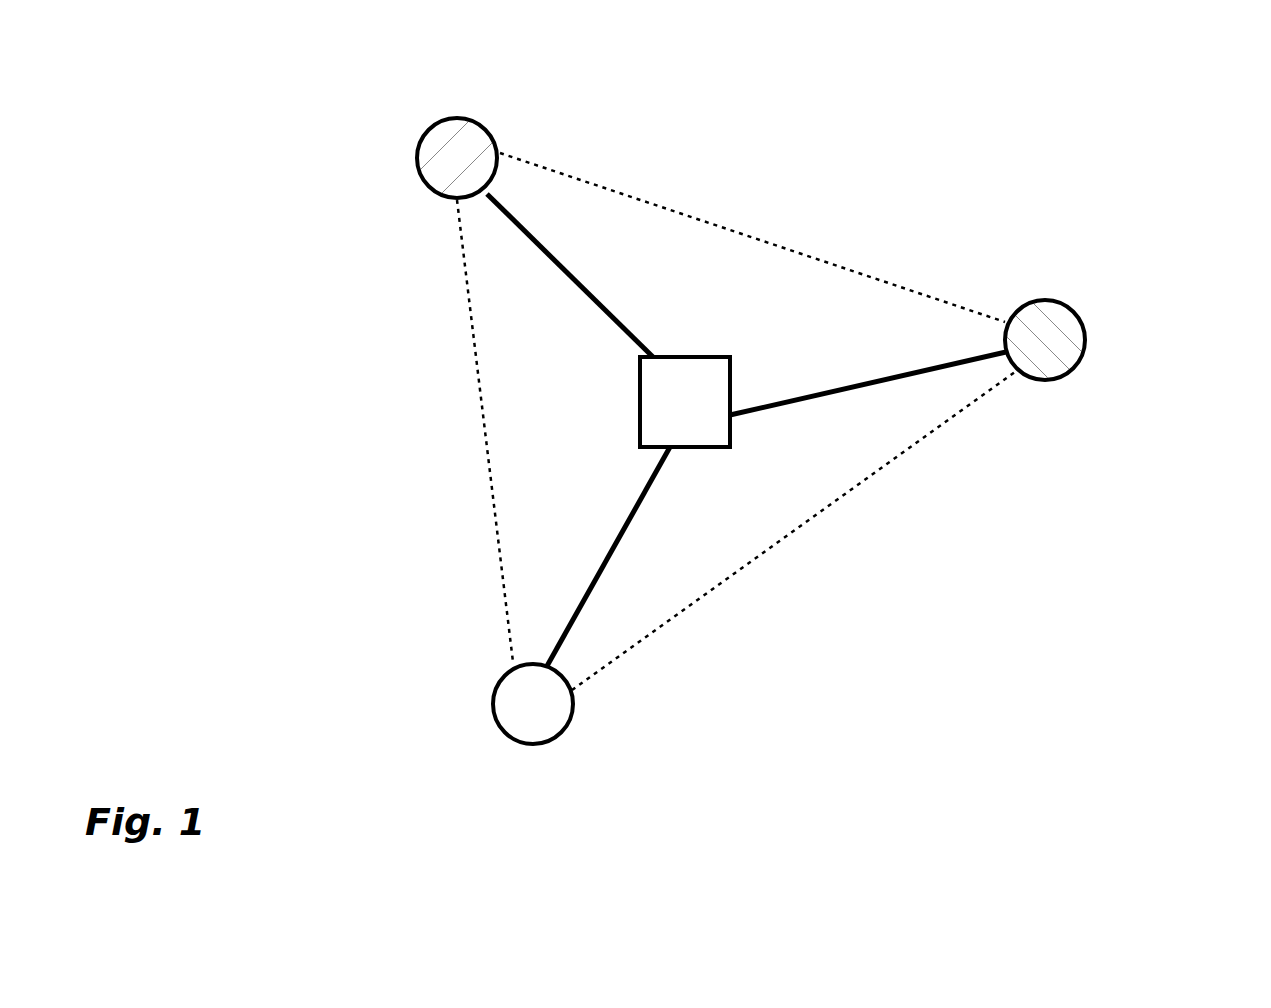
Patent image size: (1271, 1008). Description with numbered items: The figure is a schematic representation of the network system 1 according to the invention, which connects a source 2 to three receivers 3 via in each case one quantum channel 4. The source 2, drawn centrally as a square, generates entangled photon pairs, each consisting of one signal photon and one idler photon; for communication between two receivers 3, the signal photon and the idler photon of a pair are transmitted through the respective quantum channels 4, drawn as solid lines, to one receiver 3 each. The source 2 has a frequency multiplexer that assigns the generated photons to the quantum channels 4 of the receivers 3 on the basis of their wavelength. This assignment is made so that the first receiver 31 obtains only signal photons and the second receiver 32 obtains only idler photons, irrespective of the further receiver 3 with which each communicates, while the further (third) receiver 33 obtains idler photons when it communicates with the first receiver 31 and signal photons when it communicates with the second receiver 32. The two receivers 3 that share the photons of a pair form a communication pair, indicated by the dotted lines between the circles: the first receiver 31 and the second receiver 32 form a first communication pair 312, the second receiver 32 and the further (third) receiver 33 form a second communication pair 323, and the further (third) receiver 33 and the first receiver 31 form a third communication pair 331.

The network system 1 is at (413, 397).
The source 2 is at (675, 418).
The receivers 3 is at (402, 137).
The quantum channel 4 is at (617, 315).
The first receiver 31 is at (437, 174).
The second receiver 32 is at (1025, 356).
The further (third) receiver 33 is at (513, 720).
The first communication pair 312 is at (713, 222).
The third communication pair 331 is at (503, 570).
The second communication pair 323 is at (797, 528).